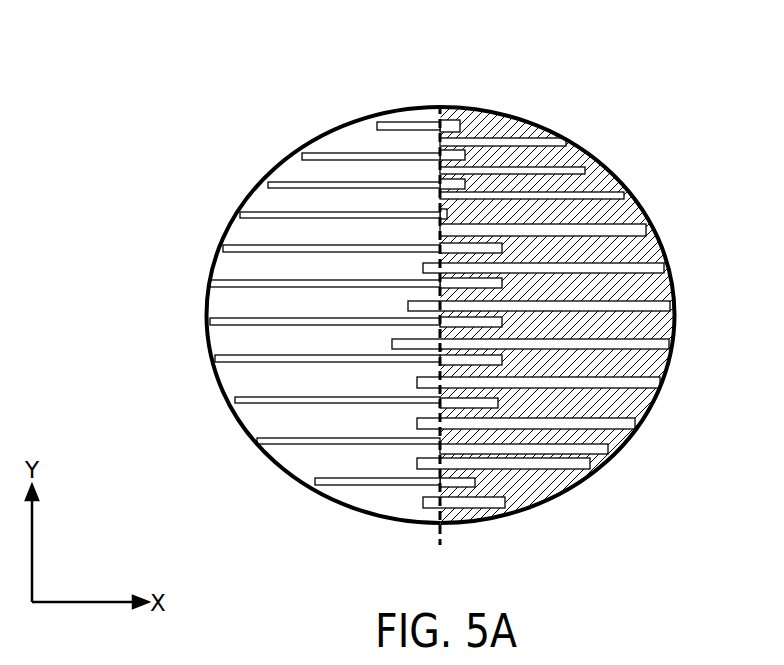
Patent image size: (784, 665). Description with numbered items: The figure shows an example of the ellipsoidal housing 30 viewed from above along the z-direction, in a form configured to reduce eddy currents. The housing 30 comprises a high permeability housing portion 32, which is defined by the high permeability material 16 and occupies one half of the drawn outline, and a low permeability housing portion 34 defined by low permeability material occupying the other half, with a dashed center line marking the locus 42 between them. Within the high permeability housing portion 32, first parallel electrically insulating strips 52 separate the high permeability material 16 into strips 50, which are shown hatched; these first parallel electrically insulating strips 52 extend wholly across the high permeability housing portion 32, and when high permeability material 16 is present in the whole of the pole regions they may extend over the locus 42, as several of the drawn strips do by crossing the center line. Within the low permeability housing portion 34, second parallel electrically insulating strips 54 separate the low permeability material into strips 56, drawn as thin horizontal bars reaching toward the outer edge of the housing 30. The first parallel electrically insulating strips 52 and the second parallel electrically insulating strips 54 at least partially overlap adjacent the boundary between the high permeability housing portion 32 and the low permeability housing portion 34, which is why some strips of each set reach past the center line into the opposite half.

The high permeability material 16 is at (426, 296).
The housing 30 is at (441, 262).
The high permeability housing portion 32 is at (518, 80).
The low permeability housing portion 34 is at (405, 80).
The locus 42 is at (443, 537).
The strips 50 is at (510, 167).
The first parallel electrically insulating strips 52 is at (562, 139).
The second parallel electrically insulating strips 54 is at (385, 124).
The strips 56 is at (340, 152).